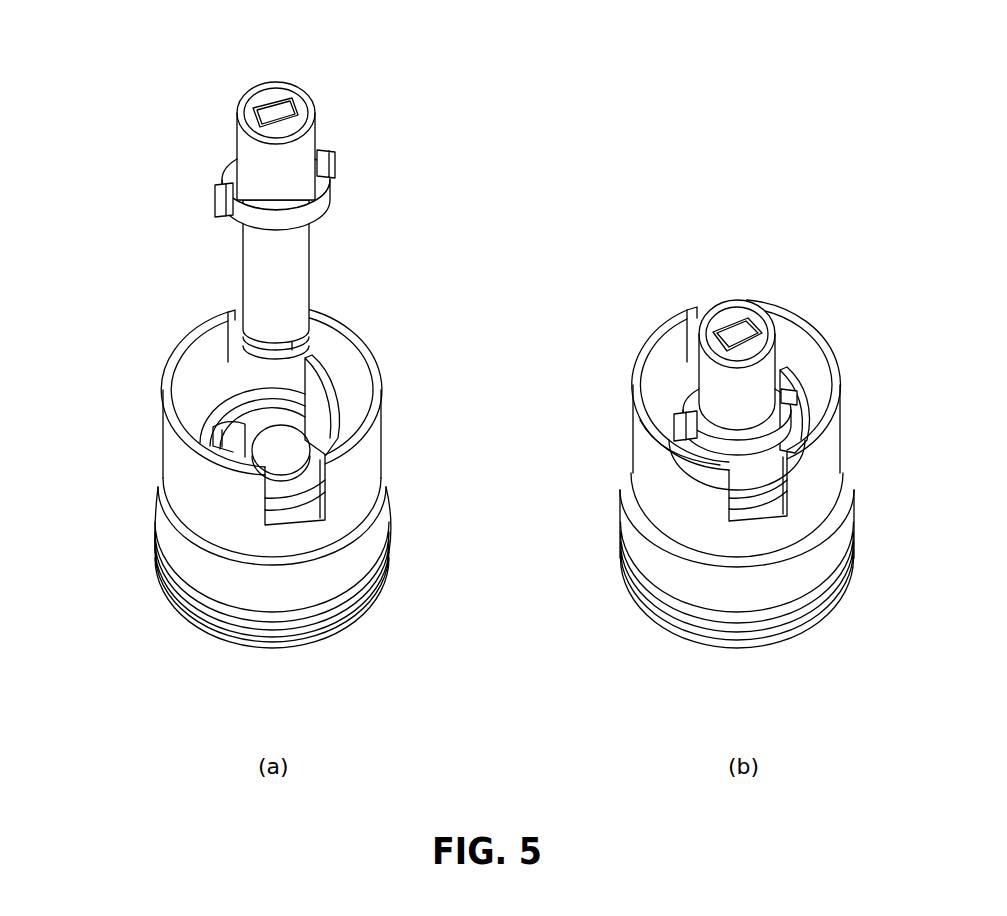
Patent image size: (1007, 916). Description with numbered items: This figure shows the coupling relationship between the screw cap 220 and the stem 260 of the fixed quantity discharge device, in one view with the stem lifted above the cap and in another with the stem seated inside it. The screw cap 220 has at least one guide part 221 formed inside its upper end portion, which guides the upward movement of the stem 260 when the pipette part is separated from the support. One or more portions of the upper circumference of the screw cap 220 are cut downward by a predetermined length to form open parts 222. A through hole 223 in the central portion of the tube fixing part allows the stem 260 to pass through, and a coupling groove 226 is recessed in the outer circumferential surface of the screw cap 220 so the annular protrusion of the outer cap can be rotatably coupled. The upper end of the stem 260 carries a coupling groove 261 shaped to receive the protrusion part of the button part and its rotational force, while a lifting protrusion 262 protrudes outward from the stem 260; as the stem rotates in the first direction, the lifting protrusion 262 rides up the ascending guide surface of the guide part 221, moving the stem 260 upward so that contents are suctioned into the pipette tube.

The screw cap 220 is at (152, 449).
The guide part 221 is at (333, 392).
The open part 222 is at (313, 510).
The through hole 223 is at (275, 445).
The coupling groove 226 is at (190, 610).
The stem 260 is at (230, 263).
The coupling groove 261 is at (270, 115).
The lifting protrusion 262 is at (220, 201).